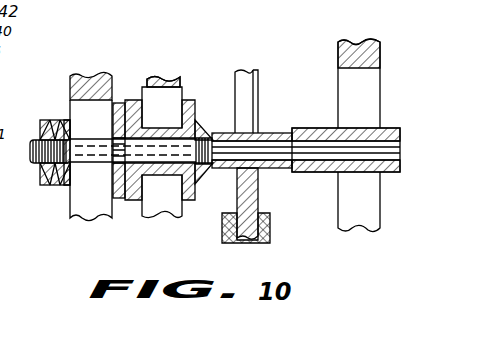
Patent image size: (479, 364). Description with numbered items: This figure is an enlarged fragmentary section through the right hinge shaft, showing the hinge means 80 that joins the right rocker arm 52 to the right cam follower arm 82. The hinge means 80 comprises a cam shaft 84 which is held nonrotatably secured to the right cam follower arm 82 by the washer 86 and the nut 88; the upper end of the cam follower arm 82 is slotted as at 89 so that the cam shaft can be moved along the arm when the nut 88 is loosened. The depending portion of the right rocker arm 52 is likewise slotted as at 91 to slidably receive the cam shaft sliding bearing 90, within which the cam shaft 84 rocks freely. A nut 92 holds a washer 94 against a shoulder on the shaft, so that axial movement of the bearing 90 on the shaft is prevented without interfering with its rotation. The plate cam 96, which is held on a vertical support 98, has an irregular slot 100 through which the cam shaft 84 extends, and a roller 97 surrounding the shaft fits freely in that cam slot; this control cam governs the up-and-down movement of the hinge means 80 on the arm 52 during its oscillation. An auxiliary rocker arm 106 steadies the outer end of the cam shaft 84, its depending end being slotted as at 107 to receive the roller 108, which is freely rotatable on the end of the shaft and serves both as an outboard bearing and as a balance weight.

The hinge means 80 is at (244, 42).
The right cam follower arm 82 is at (97, 78).
The cam shaft 84 is at (70, 182).
The washer 86 is at (64, 128).
The nut 88 is at (42, 127).
The slot 89 is at (88, 210).
The cam shaft sliding bearing 90 is at (135, 100).
The slot 91 is at (160, 200).
The nut 92 is at (212, 124).
The washer 94 is at (198, 176).
The plate cam 96 is at (258, 100).
The roller 97 is at (259, 168).
The vertical support 98 is at (262, 236).
The irregular slot 100 is at (253, 118).
The auxiliary rocker arm 106 is at (376, 62).
The slot 107 is at (366, 216).
The roller 108 is at (388, 130).
The right rocker arm 52 is at (165, 78).